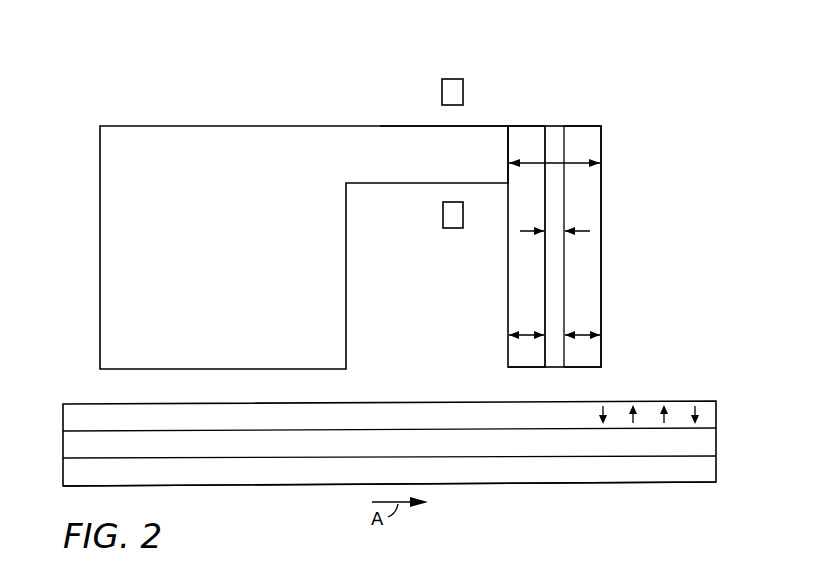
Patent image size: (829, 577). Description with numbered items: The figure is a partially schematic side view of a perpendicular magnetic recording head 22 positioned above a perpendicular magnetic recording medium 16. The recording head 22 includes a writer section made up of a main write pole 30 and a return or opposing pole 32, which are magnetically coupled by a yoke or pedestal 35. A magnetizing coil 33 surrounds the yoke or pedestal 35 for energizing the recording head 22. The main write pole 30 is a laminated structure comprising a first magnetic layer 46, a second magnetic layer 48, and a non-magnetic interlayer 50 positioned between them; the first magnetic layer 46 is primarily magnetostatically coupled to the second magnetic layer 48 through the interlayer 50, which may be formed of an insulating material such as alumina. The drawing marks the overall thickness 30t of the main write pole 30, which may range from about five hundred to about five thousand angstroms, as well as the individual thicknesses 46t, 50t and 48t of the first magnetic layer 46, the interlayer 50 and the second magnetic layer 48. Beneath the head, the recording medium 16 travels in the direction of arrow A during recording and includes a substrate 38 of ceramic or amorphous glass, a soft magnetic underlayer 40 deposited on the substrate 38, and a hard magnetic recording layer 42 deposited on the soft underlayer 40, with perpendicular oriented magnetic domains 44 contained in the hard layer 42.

The perpendicular magnetic recording head 22 is at (86, 97).
The return or opposing pole 32 is at (112, 276).
The yoke or pedestal 35 is at (406, 140).
The magnetizing coil 33 is at (452, 90).
The main write pole 30 is at (509, 369).
The first magnetic layer 46 is at (518, 130).
The non-magnetic interlayer 50 is at (556, 130).
The second magnetic layer 48 is at (584, 130).
The thickness of the main write pole 30t is at (584, 170).
The thickness of gap layer 50t is at (558, 233).
The thickness of first pole layer 46t is at (516, 336).
The thickness of second pole layer 48t is at (588, 330).
The perpendicular magnetic recording medium 16 is at (63, 397).
The hard magnetic recording layer 42 is at (332, 413).
The soft magnetic underlayer 40 is at (75, 446).
The substrate 38 is at (688, 470).
The perpendicular oriented magnetic domains 44 is at (700, 412).